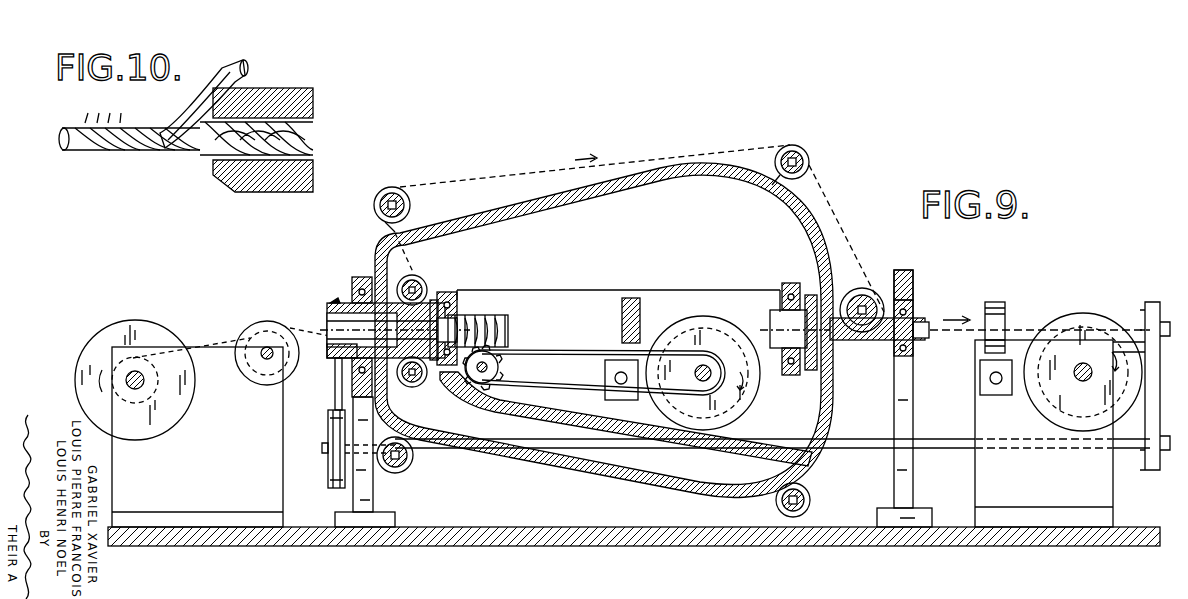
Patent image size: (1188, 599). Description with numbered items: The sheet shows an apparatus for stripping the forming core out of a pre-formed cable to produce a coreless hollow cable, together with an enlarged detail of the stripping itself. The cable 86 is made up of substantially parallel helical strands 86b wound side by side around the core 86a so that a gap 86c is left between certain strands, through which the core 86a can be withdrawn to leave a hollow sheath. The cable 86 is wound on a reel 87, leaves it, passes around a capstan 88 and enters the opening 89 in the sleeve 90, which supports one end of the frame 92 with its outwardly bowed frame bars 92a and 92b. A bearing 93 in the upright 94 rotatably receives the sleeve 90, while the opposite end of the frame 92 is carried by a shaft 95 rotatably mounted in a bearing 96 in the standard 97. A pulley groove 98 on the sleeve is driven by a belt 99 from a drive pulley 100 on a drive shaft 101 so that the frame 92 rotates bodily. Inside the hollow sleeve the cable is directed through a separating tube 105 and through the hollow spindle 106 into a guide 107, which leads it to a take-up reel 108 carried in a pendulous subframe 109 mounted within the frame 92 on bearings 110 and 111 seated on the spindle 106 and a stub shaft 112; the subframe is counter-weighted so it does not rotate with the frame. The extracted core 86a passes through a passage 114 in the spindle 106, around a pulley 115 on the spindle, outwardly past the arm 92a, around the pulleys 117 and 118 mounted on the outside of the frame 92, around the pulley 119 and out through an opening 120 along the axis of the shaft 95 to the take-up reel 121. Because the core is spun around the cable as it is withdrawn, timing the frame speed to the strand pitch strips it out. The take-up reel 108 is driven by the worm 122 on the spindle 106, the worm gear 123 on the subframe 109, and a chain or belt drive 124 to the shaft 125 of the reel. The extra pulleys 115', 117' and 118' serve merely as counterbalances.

In FIG. 10, the cable 86 is at (130, 157).
In FIG. 9, the cable 86 is at (215, 343).
In FIG. 10, the core 86a is at (236, 64).
In FIG. 9, the core 86a is at (345, 316).
In FIG. 10, the helical strands 86b is at (80, 125).
In FIG. 10, the gap 86c is at (196, 158).
In FIG. 9, the reel 87 is at (120, 322).
In FIG. 9, the capstan 88 is at (270, 321).
In FIG. 9, the opening 89 is at (333, 356).
In FIG. 9, the sleeve 90 is at (352, 290).
In FIG. 9, the frame 92 is at (505, 213).
In FIG. 9, the frame bar 92a is at (664, 171).
In FIG. 9, the frame bar 92b is at (572, 472).
In FIG. 9, the bearing 93 is at (366, 277).
In FIG. 9, the upright 94 is at (368, 486).
In FIG. 9, the shaft 95 is at (927, 322).
In FIG. 9, the bearing 96 is at (897, 354).
In FIG. 9, the standard 97 is at (912, 404).
In FIG. 9, the pulley groove 98 is at (334, 300).
In FIG. 9, the belt 99 is at (335, 393).
In FIG. 9, the drive pulley 100 is at (330, 476).
In FIG. 9, the drive shaft 101 is at (860, 446).
In FIG. 10, the separating tube 105 is at (310, 92).
In FIG. 9, the separating tube 105 is at (330, 343).
In FIG. 9, the spindle 106 is at (440, 296).
In FIG. 9, the guide 107 is at (634, 300).
In FIG. 9, the take-up reel 108 is at (690, 322).
In FIG. 9, the pendulous subframe 109 is at (610, 290).
In FIG. 9, the bearing 110 is at (460, 296).
In FIG. 9, the bearing 111 is at (781, 293).
In FIG. 9, the stub shaft 112 is at (776, 324).
In FIG. 9, the passage 114 is at (418, 282).
In FIG. 9, the pulley 115 is at (423, 236).
In FIG. 9, the extra pulley 115' is at (421, 385).
In FIG. 9, the pulley 117 is at (377, 203).
In FIG. 9, the extra pulley 117' is at (420, 457).
In FIG. 9, the pulley 118 is at (806, 155).
In FIG. 9, the extra pulley 118' is at (816, 494).
In FIG. 9, the pulley 119 is at (861, 288).
In FIG. 9, the opening 120 is at (922, 336).
In FIG. 9, the take-up reel 121 is at (1078, 315).
In FIG. 9, the worm 122 is at (500, 316).
In FIG. 9, the worm gear 123 is at (500, 367).
In FIG. 9, the chain or belt drive 124 is at (572, 386).
In FIG. 9, the shaft 125 is at (697, 378).